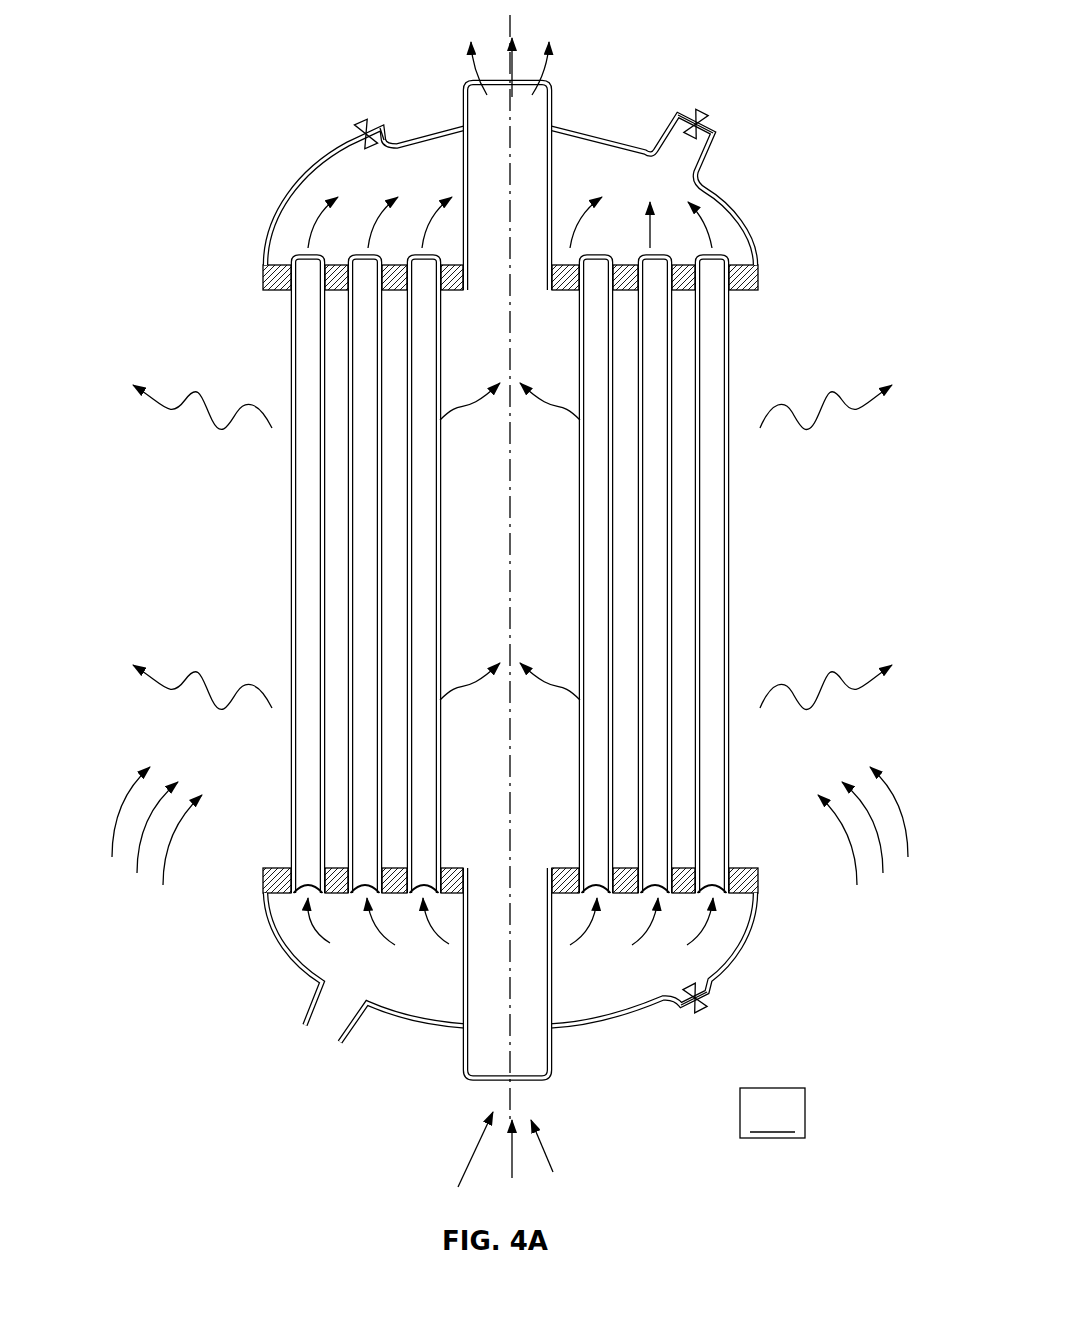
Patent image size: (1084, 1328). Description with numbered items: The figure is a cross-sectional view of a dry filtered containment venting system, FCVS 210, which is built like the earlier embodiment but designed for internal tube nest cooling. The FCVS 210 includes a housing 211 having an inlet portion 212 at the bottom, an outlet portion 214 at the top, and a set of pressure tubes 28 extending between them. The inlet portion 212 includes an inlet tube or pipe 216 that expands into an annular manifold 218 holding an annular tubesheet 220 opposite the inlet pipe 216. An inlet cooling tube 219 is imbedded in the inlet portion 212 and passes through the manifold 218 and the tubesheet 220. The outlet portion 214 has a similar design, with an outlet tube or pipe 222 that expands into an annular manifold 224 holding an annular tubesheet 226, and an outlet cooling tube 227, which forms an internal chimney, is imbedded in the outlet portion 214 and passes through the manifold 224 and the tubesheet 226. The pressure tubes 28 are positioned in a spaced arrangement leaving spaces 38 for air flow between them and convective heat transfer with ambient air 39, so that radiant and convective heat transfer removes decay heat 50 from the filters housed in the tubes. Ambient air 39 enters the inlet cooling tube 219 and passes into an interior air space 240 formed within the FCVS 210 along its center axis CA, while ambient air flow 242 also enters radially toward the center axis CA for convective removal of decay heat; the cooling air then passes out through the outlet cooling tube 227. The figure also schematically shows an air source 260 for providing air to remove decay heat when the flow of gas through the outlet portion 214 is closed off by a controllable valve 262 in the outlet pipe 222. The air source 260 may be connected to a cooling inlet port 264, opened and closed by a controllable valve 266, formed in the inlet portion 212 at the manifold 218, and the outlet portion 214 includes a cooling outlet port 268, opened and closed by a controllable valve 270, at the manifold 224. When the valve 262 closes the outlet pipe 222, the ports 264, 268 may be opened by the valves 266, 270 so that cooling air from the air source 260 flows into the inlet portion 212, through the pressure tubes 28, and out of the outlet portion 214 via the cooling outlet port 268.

The dry FCVS 210 is at (225, 1080).
The housing 211 is at (640, 137).
The inlet portion 212 is at (652, 1022).
The outlet portion 214 is at (336, 150).
The inlet tube or pipe 216 is at (352, 1032).
The annular manifold 218 is at (578, 1030).
The inlet cooling tube 219 is at (466, 1046).
The annular tubesheet 220 is at (262, 882).
The outlet tube or pipe 222 is at (708, 140).
The annular manifold 224 is at (752, 232).
The annular tubesheet 226 is at (745, 292).
The outlet cooling tube 227 is at (463, 115).
The interior air space 240 is at (568, 564).
The ambient air flow 242 is at (118, 808).
The air source 260 is at (710, 1008).
The controllable valve 262 is at (700, 112).
The cooling inlet port 264 is at (725, 978).
The controllable valve 266 is at (713, 1005).
The cooling outlet port 268 is at (384, 118).
The controllable valve 270 is at (360, 123).
The pressure tubes 28 is at (365, 606).
The spaces 38 is at (395, 487).
The ambient air 39 is at (893, 539).
The decay heat 50 is at (192, 388).
The center axis CA is at (510, 203).